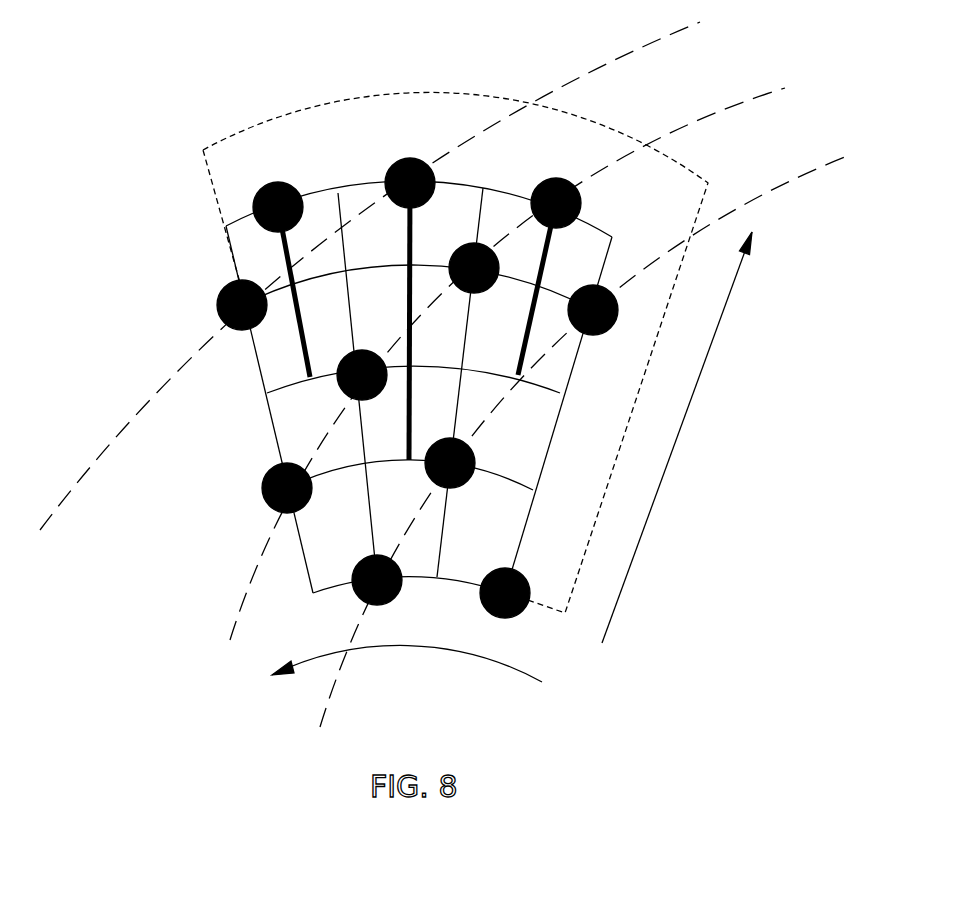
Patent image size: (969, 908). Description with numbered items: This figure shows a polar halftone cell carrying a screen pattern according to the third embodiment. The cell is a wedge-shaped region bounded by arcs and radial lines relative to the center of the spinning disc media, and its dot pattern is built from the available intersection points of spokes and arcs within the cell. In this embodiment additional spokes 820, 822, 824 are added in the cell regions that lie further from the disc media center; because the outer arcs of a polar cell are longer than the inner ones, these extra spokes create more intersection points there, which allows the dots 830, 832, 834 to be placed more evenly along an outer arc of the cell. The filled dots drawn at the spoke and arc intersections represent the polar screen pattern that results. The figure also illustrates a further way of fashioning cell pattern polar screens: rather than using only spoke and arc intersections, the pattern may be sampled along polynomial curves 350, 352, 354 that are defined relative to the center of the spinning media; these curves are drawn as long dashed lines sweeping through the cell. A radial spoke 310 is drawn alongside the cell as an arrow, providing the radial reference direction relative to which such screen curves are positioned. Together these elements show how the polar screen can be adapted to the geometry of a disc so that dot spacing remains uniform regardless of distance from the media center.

The radial spoke 310 is at (685, 425).
The polynomial curve 350 is at (258, 567).
The polynomial curve 352 is at (323, 716).
The polynomial curve 354 is at (147, 404).
The spoke 820 is at (284, 252).
The spoke 822 is at (403, 232).
The spoke 824 is at (548, 266).
The dot 830 is at (253, 206).
The dot 832 is at (397, 166).
The dot 834 is at (551, 180).